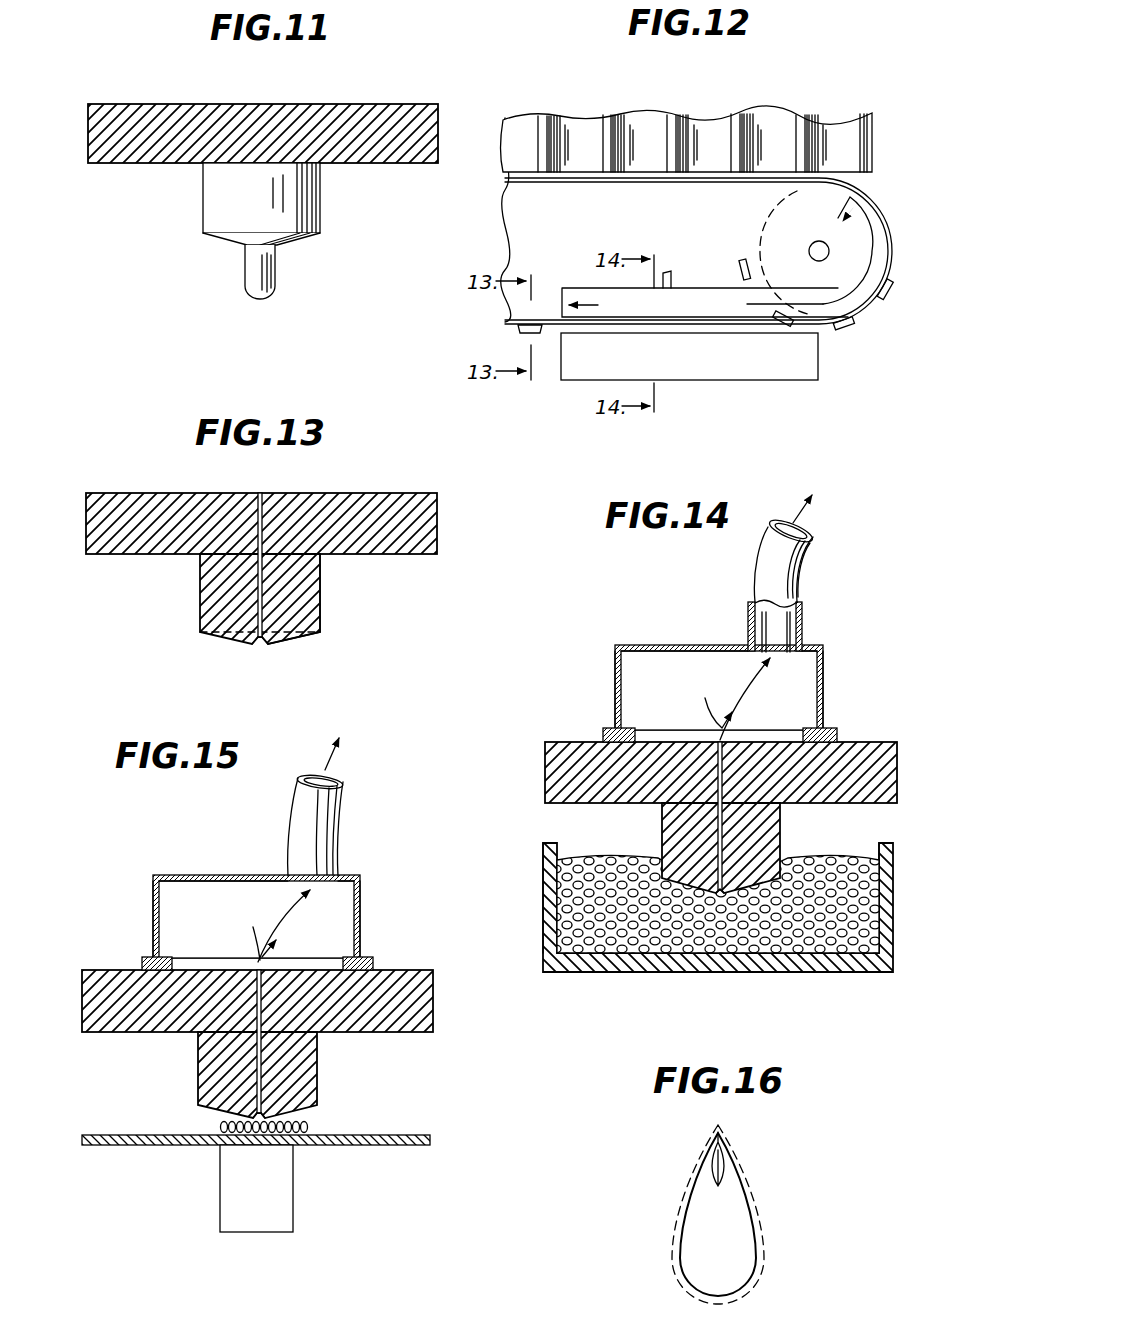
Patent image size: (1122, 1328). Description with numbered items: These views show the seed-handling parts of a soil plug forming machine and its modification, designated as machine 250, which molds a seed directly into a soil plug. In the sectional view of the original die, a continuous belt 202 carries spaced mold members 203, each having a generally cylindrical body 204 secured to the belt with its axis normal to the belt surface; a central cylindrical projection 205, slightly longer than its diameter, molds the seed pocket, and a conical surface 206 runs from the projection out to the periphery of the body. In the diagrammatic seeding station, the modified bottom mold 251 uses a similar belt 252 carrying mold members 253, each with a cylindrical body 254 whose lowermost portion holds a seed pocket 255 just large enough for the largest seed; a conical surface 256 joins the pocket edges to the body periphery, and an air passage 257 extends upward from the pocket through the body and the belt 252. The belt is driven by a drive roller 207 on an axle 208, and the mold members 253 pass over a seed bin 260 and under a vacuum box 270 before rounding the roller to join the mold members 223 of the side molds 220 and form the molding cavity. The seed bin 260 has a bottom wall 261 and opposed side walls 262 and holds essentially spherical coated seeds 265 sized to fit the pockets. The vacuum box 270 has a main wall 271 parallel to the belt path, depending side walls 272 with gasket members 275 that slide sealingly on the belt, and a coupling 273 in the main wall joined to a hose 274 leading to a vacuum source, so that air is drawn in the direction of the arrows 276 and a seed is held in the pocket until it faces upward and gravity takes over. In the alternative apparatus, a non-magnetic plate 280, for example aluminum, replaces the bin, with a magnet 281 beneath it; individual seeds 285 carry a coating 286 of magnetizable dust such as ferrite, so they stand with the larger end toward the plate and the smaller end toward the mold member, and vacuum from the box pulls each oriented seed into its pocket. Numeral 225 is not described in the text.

In FIG. 11, the continuous belt 202 is at (386, 112).
In FIG. 11, the mold member 203 is at (328, 213).
In FIG. 11, the cylindrical body 204 is at (316, 184).
In FIG. 11, the projection 205 is at (277, 277).
In FIG. 11, the conical surface 206 is at (293, 241).
In FIG. 12, the drive roller 207 is at (754, 252).
In FIG. 12, the axle 208 is at (818, 242).
In FIG. 12, the side mold 220 is at (602, 112).
In FIG. 12, the mold member of side mold 223 is at (672, 112).
In FIG. 12, the tray cell 225 is at (641, 132).
In FIG. 12, the modified soil plug forming machine 250 is at (883, 63).
In FIG. 12, the bottom mold 251 is at (494, 303).
In FIG. 13, the bottom mold 251 is at (158, 573).
In FIG. 12, the belt 252 is at (642, 178).
In FIG. 13, the belt 252 is at (390, 502).
In FIG. 14, the belt 252 is at (553, 766).
In FIG. 15, the belt 252 is at (90, 988).
In FIG. 12, the mold member 253 is at (518, 330).
In FIG. 13, the mold member 253 is at (304, 592).
In FIG. 14, the mold member 253 is at (782, 827).
In FIG. 15, the mold member 253 is at (209, 1048).
In FIG. 13, the cylindrical body 254 is at (321, 571).
In FIG. 13, the seed pocket 255 is at (262, 646).
In FIG. 14, the seed pocket 255 is at (726, 890).
In FIG. 15, the seed pocket 255 is at (254, 1118).
In FIG. 13, the conical surface 256 is at (292, 639).
In FIG. 13, the air passage 257 is at (258, 520).
In FIG. 14, the air passage 257 is at (726, 750).
In FIG. 15, the air passage 257 is at (263, 976).
In FIG. 12, the seed bin 260 is at (758, 384).
In FIG. 14, the seed bin 260 is at (540, 878).
In FIG. 14, the bottom wall 261 is at (634, 966).
In FIG. 14, the side wall 262 is at (551, 912).
In FIG. 14, the seed 265 is at (600, 878).
In FIG. 12, the vacuum box 270 is at (582, 286).
In FIG. 14, the vacuum box 270 is at (646, 634).
In FIG. 15, the vacuum box 270 is at (200, 866).
In FIG. 14, the main wall 271 is at (686, 645).
In FIG. 15, the main wall 271 is at (236, 874).
In FIG. 14, the side wall 272 is at (616, 677).
In FIG. 15, the side wall 272 is at (154, 893).
In FIG. 14, the coupling 273 is at (803, 629).
In FIG. 12, the hose 274 is at (673, 275).
In FIG. 14, the hose 274 is at (813, 551).
In FIG. 15, the hose 274 is at (339, 821).
In FIG. 14, the gasket member 275 is at (608, 730).
In FIG. 15, the gasket member 275 is at (150, 957).
In FIG. 14, the arrows 276 is at (805, 512).
In FIG. 15, the arrows 276 is at (331, 762).
In FIG. 15, the non-magnetic plate 280 is at (386, 1134).
In FIG. 15, the magnet 281 is at (295, 1190).
In FIG. 15, the seed 285 is at (308, 1126).
In FIG. 16, the seed 285 is at (707, 1209).
In FIG. 16, the coating 286 is at (753, 1190).